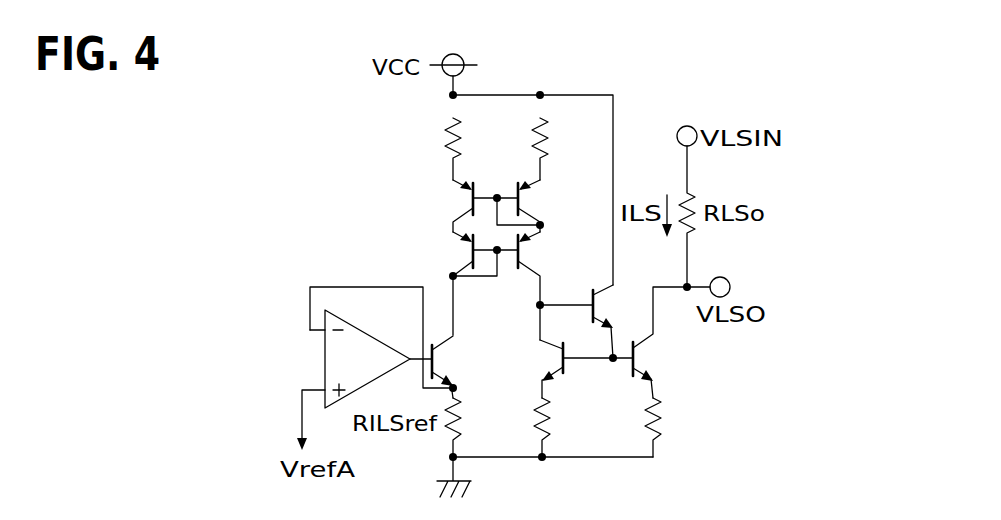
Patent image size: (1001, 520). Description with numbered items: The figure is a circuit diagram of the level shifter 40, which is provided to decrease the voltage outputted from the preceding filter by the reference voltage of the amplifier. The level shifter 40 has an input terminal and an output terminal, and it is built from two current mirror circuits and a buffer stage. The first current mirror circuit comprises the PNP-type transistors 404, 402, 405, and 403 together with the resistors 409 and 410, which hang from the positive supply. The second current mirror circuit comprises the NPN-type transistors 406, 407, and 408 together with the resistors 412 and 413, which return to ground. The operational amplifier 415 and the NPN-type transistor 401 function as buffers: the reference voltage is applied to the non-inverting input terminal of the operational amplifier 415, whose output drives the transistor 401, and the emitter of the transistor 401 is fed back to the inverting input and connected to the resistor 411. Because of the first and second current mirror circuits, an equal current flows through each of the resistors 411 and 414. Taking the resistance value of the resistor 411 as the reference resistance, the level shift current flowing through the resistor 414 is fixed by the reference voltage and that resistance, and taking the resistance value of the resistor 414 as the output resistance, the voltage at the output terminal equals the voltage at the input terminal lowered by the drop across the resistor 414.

The level shifter 40 is at (652, 78).
The NPN-type transistor 401 is at (440, 350).
The PNP-type transistor 402 is at (466, 242).
The PNP-type transistor 403 is at (532, 243).
The PNP-type transistor 404 is at (466, 190).
The PNP-type transistor 405 is at (530, 190).
The NPN-type transistor 406 is at (597, 298).
The NPN-type transistor 407 is at (560, 352).
The NPN-type transistor 408 is at (650, 350).
The resistor 409 is at (448, 130).
The resistor 410 is at (546, 130).
The resistor 411 is at (465, 408).
The resistor 412 is at (550, 408).
The resistor 413 is at (662, 408).
The resistor 414 is at (692, 195).
The operational amplifier 415 is at (345, 318).